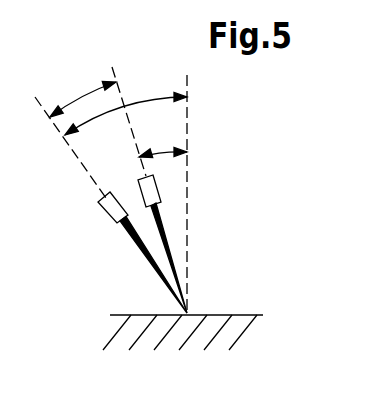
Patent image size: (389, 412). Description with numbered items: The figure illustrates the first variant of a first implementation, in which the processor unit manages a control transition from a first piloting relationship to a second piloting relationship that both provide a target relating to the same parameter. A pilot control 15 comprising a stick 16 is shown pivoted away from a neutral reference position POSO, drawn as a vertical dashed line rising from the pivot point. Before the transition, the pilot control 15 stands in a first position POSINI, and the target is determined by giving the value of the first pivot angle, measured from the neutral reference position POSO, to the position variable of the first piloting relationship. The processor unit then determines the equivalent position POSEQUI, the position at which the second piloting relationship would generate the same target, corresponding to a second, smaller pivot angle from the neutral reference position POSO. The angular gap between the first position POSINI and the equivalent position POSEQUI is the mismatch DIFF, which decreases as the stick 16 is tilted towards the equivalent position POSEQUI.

The pilot control 15 is at (193, 248).
The stick 16 is at (193, 248).
The neutral reference position POSO is at (187, 238).
The first position POSINI is at (156, 274).
The equivalent position POSEQUI is at (163, 181).
The mismatch DIFF is at (74, 89).